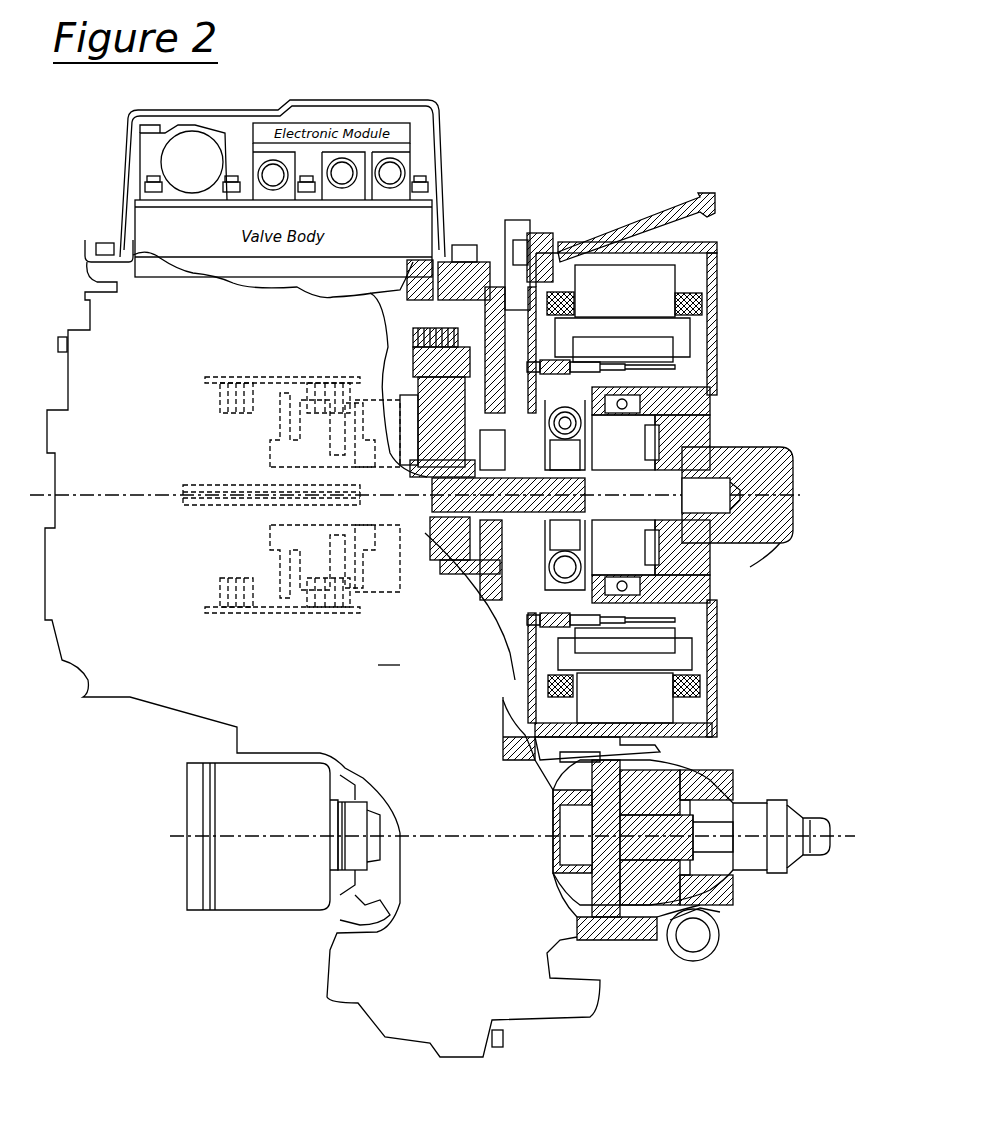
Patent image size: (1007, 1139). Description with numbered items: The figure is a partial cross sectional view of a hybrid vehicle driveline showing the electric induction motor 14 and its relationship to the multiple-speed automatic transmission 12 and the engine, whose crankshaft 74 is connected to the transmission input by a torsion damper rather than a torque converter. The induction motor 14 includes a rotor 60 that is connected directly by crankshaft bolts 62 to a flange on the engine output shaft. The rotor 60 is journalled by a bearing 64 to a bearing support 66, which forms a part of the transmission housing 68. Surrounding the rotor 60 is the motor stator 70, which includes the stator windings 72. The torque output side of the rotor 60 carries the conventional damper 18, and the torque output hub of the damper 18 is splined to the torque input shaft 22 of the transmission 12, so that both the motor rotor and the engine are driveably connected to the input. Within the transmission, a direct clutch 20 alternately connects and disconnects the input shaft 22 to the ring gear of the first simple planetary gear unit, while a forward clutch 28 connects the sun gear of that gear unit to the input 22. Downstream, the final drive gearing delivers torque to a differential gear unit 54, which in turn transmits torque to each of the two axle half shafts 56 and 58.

The multiple-speed vehicle transmission 12 is at (322, 638).
The induction motor 14 is at (658, 458).
The torsion damper 18 is at (538, 392).
The direct clutch 20 is at (215, 400).
The transmission input shaft 22 is at (540, 465).
The forward clutch 28 is at (303, 407).
The differential gear unit 54 is at (713, 726).
The axle half shaft 56 is at (797, 820).
The axle half shaft 58 is at (363, 897).
The rotor 60 is at (685, 336).
The crankshaft bolts 62 is at (708, 432).
The bearing 64 is at (708, 392).
The bearing support 66 is at (690, 365).
The transmission housing 68 is at (612, 238).
The motor stator 70 is at (708, 243).
The stator windings 72 is at (717, 270).
The engine crankshaft 74 is at (747, 560).